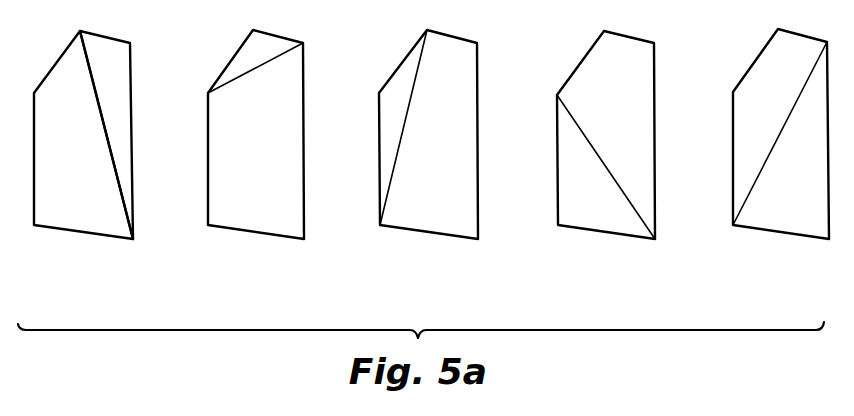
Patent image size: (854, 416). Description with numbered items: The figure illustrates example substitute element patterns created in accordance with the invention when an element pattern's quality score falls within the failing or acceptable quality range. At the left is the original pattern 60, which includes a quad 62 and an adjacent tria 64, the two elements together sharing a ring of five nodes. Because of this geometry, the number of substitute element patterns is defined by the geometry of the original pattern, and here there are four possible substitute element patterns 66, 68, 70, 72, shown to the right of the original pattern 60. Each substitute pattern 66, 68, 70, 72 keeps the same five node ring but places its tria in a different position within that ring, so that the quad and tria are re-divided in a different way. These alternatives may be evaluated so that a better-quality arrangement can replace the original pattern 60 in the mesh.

The original pattern 60 is at (83, 165).
The quad 62 is at (83, 135).
The tria 64 is at (106, 135).
The substitute element pattern 66 is at (242, 243).
The substitute element pattern 68 is at (414, 243).
The substitute element pattern 70 is at (591, 243).
The substitute element pattern 72 is at (765, 243).